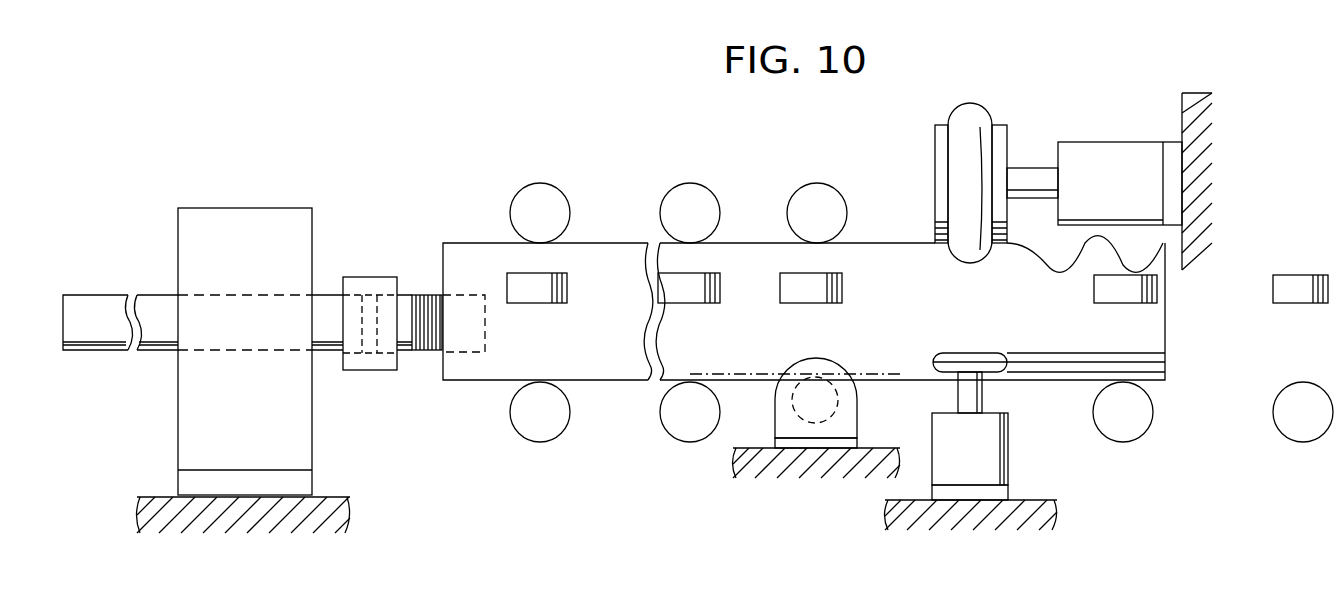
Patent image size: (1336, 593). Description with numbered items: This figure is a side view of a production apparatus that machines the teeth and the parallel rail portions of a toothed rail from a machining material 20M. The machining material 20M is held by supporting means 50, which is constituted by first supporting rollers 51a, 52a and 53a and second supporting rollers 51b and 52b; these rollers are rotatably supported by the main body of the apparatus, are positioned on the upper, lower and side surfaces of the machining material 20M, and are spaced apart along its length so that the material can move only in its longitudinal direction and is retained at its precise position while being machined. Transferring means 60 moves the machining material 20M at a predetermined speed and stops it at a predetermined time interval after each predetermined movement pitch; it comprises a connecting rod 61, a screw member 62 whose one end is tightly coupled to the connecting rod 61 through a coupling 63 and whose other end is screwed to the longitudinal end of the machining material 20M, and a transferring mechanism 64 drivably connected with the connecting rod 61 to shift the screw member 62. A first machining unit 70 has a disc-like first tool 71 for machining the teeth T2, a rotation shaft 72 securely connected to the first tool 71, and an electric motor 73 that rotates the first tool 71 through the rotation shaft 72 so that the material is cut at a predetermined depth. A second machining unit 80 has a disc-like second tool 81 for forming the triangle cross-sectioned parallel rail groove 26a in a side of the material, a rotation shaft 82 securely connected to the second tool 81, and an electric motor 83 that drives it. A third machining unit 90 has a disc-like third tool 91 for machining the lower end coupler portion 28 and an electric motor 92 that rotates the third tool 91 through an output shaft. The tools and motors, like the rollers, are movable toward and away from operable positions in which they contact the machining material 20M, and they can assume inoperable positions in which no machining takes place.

The transferring means 60 is at (212, 158).
The connecting rod 61 is at (157, 355).
The screw member 62 is at (420, 355).
The coupling 63 is at (371, 277).
The transferring mechanism 64 is at (252, 206).
The supporting means 50 is at (487, 185).
The machining material 20M is at (615, 255).
The first supporting rollers 53a is at (538, 200).
The first supporting rollers 51a is at (557, 427).
The second supporting rollers 51b is at (1132, 435).
The first supporting rollers 52a is at (536, 300).
The second supporting rollers 52b is at (1293, 278).
The lower end coupler portion 28 is at (752, 377).
The parallel rail groove 26a is at (1140, 351).
The third machining unit 90 is at (812, 477).
The third tool 91 is at (773, 418).
The electric motor 92 is at (842, 425).
The second machining unit 80 is at (1045, 475).
The second tool 81 is at (977, 352).
The rotation shaft 82 is at (982, 397).
The electric motor 83 is at (1010, 452).
The first machining unit 70 is at (1068, 113).
The first tool 71 is at (938, 182).
The rotation shaft 72 is at (1032, 185).
The electric motor 73 is at (1110, 152).
The teeth T2 is at (1082, 247).